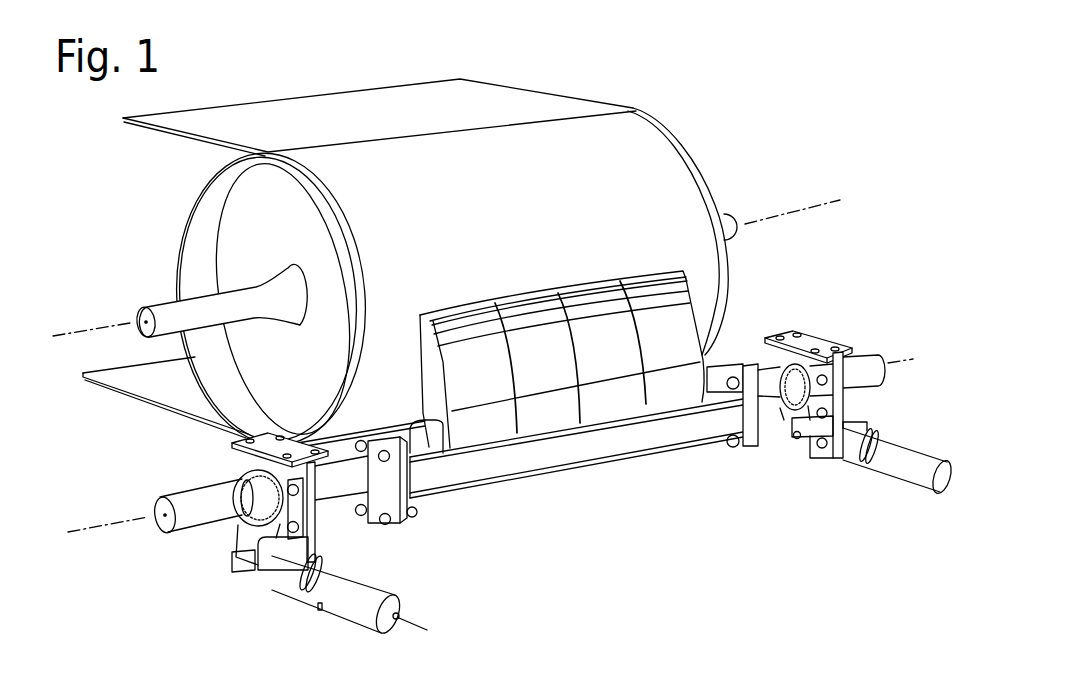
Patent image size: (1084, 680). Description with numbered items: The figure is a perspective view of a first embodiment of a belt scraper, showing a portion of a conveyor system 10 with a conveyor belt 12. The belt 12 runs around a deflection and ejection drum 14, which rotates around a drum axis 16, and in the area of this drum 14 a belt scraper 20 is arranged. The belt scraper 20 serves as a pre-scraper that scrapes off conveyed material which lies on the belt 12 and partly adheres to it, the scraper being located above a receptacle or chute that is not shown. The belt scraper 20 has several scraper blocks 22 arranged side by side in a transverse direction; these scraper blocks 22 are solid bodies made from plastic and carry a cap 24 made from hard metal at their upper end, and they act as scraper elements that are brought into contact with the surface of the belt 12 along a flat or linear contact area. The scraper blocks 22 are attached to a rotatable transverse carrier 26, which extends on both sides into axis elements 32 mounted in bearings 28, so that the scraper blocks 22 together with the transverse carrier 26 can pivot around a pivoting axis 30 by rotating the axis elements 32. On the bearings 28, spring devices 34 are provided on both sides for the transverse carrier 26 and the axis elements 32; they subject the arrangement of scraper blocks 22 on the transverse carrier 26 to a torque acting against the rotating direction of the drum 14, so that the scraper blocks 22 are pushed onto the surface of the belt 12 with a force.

The conveyor system 10 is at (516, 61).
The conveyor belt 12 is at (338, 105).
The deflection and ejection drum 14 is at (683, 143).
The drum axis 16 is at (102, 327).
The belt scraper 20 is at (796, 300).
The scraper blocks 22 is at (472, 430).
The cap 24 is at (448, 317).
The transverse carrier 26 is at (697, 435).
The bearings 28 is at (777, 360).
The pivoting axis 30 is at (97, 530).
The axis elements 32 is at (863, 367).
The spring devices 34 is at (172, 601).